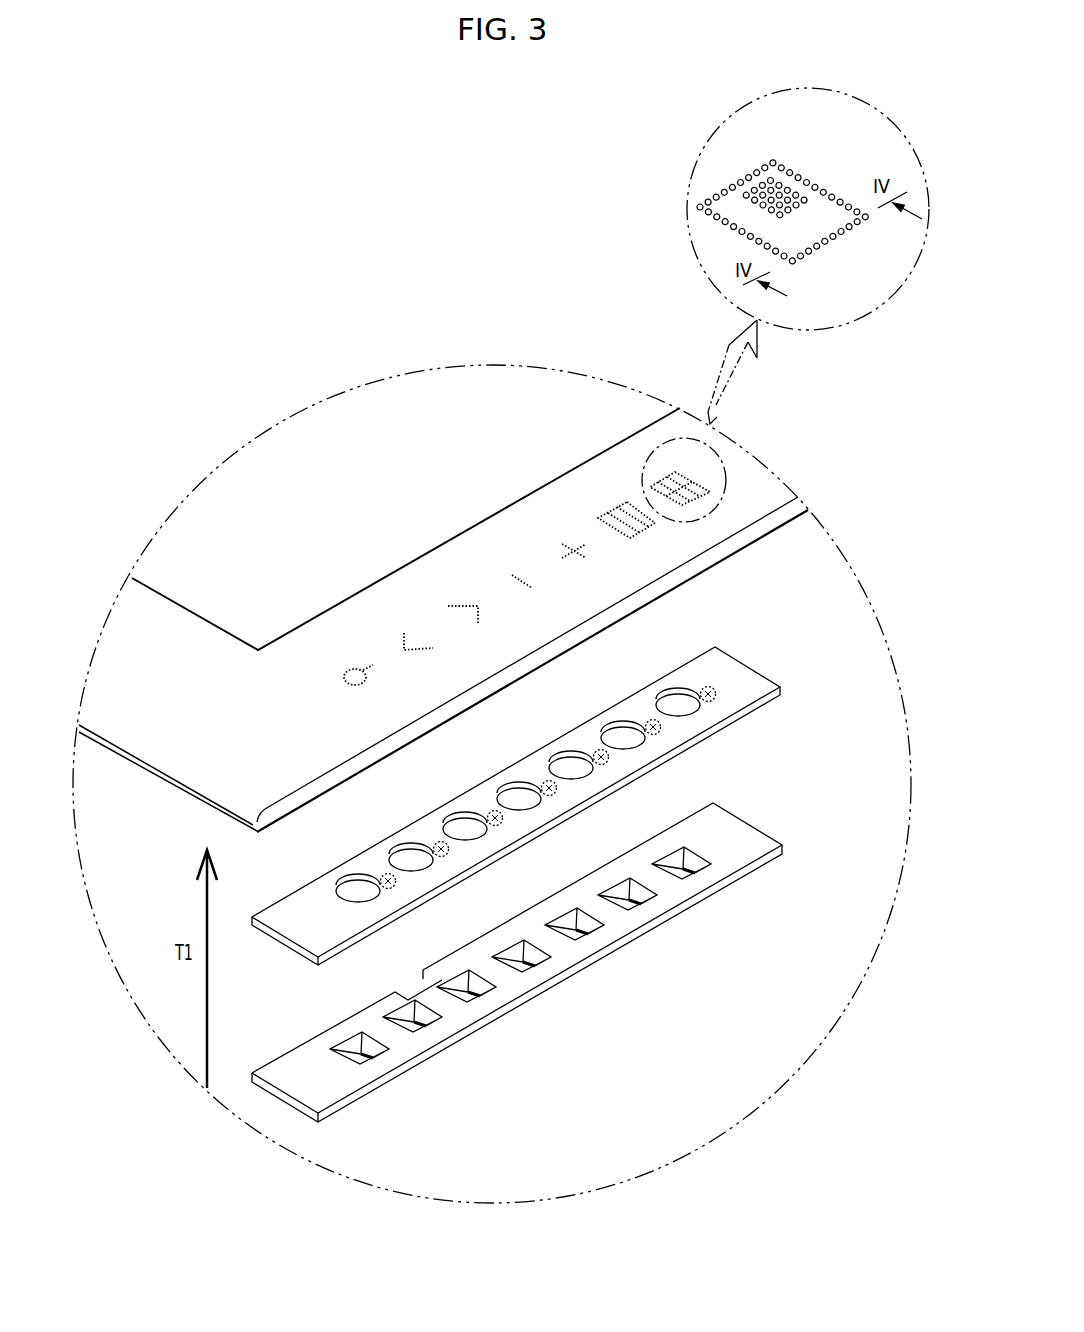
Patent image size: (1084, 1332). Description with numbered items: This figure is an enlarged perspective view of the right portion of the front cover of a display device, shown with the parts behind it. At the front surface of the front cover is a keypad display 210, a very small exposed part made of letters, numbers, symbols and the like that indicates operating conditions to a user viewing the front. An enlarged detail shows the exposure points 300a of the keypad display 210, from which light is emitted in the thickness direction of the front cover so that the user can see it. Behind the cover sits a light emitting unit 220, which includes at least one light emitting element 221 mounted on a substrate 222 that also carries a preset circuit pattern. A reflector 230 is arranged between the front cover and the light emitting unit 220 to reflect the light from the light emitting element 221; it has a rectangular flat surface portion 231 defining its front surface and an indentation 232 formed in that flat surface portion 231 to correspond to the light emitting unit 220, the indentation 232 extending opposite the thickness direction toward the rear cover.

The keypad display 210 is at (478, 580).
The light emitting unit 220 is at (547, 774).
The light emitting element 221 is at (716, 698).
The substrate 222 is at (707, 665).
The reflector 230 is at (532, 930).
The flat surface portion 231 is at (703, 830).
The indentation 232 is at (690, 862).
The exposure points 300a is at (710, 200).